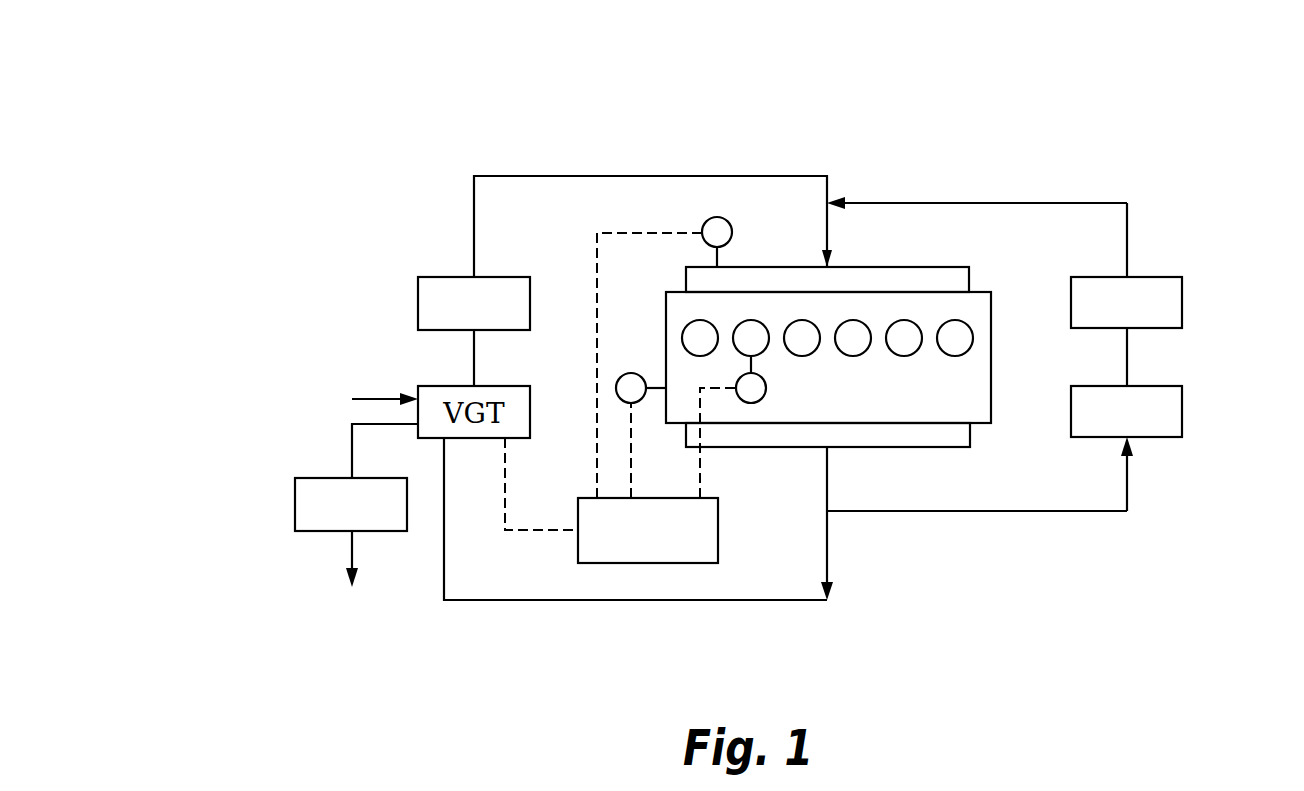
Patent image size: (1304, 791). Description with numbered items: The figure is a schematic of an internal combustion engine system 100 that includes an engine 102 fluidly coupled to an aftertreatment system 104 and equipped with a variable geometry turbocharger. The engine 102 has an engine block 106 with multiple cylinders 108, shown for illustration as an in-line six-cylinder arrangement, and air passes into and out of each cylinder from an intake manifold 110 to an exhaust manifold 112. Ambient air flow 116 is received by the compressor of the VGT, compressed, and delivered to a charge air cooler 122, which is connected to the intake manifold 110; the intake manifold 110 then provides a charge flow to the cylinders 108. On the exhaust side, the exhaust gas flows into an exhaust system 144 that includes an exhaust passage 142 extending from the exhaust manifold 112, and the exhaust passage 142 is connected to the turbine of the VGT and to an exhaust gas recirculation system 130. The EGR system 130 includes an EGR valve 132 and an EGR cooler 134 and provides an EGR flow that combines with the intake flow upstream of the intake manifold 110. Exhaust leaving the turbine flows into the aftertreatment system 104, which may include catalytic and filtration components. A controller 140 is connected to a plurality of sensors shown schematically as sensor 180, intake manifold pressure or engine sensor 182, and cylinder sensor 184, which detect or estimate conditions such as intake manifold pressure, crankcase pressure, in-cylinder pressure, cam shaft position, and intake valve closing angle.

The system 100 is at (962, 90).
The engine 102 is at (856, 342).
The aftertreatment system 104 is at (295, 518).
The engine block 106 is at (993, 395).
The cylinders 108 is at (775, 330).
The intake manifold 110 is at (872, 267).
The exhaust manifold 112 is at (892, 437).
The ambient air flow 116 is at (370, 398).
The charge air cooler (CAC) 122 is at (418, 290).
The exhaust gas recirculation (EGR) system 130 is at (1055, 354).
The EGR valve 132 is at (1168, 410).
The EGR cooler 134 is at (1152, 288).
The controller 140 is at (666, 545).
The exhaust passage 142 is at (538, 601).
The exhaust system 144 is at (865, 644).
The sensor 180 is at (732, 240).
The intake manifold pressure sensor / engine sensor 182 is at (626, 373).
The cylinder sensor 184 is at (766, 400).